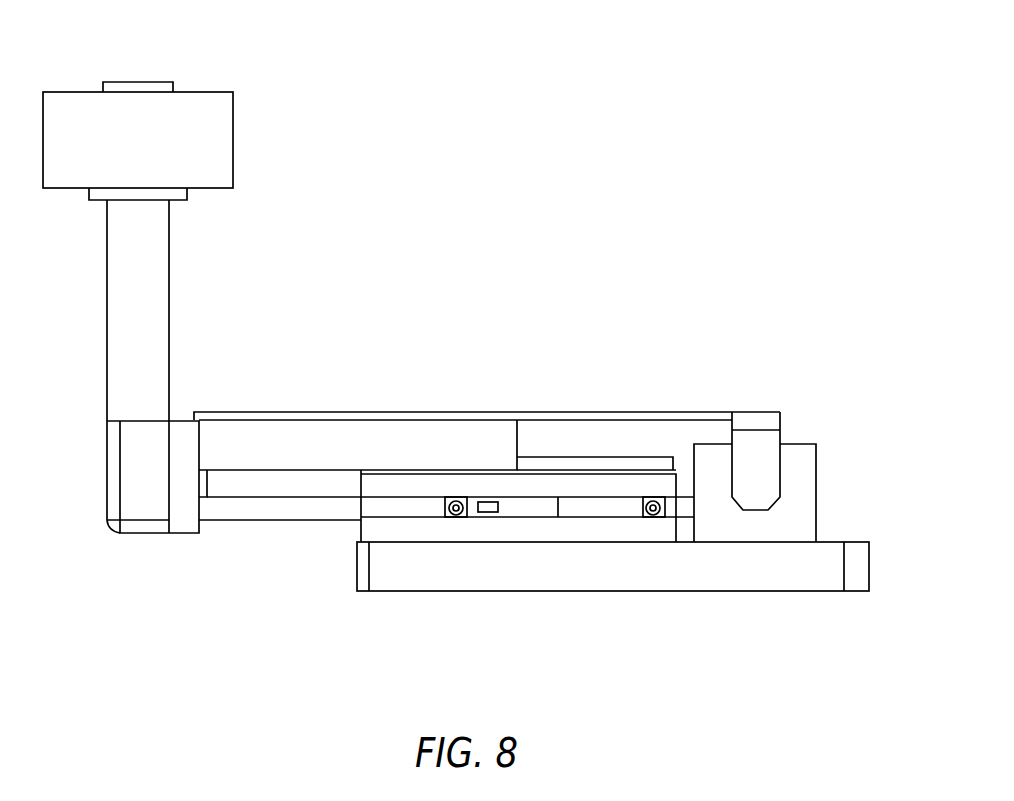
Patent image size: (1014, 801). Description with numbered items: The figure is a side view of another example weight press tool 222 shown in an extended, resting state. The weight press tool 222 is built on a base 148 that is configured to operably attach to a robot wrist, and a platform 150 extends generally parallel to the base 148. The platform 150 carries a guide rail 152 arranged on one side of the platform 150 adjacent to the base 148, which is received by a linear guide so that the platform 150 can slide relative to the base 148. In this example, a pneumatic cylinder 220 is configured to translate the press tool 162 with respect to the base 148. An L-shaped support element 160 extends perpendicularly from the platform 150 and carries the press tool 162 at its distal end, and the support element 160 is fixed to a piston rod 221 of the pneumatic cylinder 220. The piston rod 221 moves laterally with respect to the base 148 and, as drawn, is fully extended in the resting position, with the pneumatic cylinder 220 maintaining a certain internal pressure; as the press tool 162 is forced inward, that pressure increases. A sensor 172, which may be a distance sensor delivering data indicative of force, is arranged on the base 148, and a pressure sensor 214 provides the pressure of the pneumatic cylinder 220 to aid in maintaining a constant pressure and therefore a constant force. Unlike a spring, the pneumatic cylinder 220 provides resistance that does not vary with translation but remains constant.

The base 148 is at (705, 568).
The platform 150 is at (443, 412).
The guide rail 152 is at (593, 466).
The support element 160 is at (150, 307).
The press tool 162 is at (83, 92).
The sensor 172 is at (797, 489).
The pressure sensor 214 is at (675, 458).
The pneumatic cylinder 220 is at (412, 486).
The piston rod 221 is at (306, 507).
The weight press tool 222 is at (766, 160).